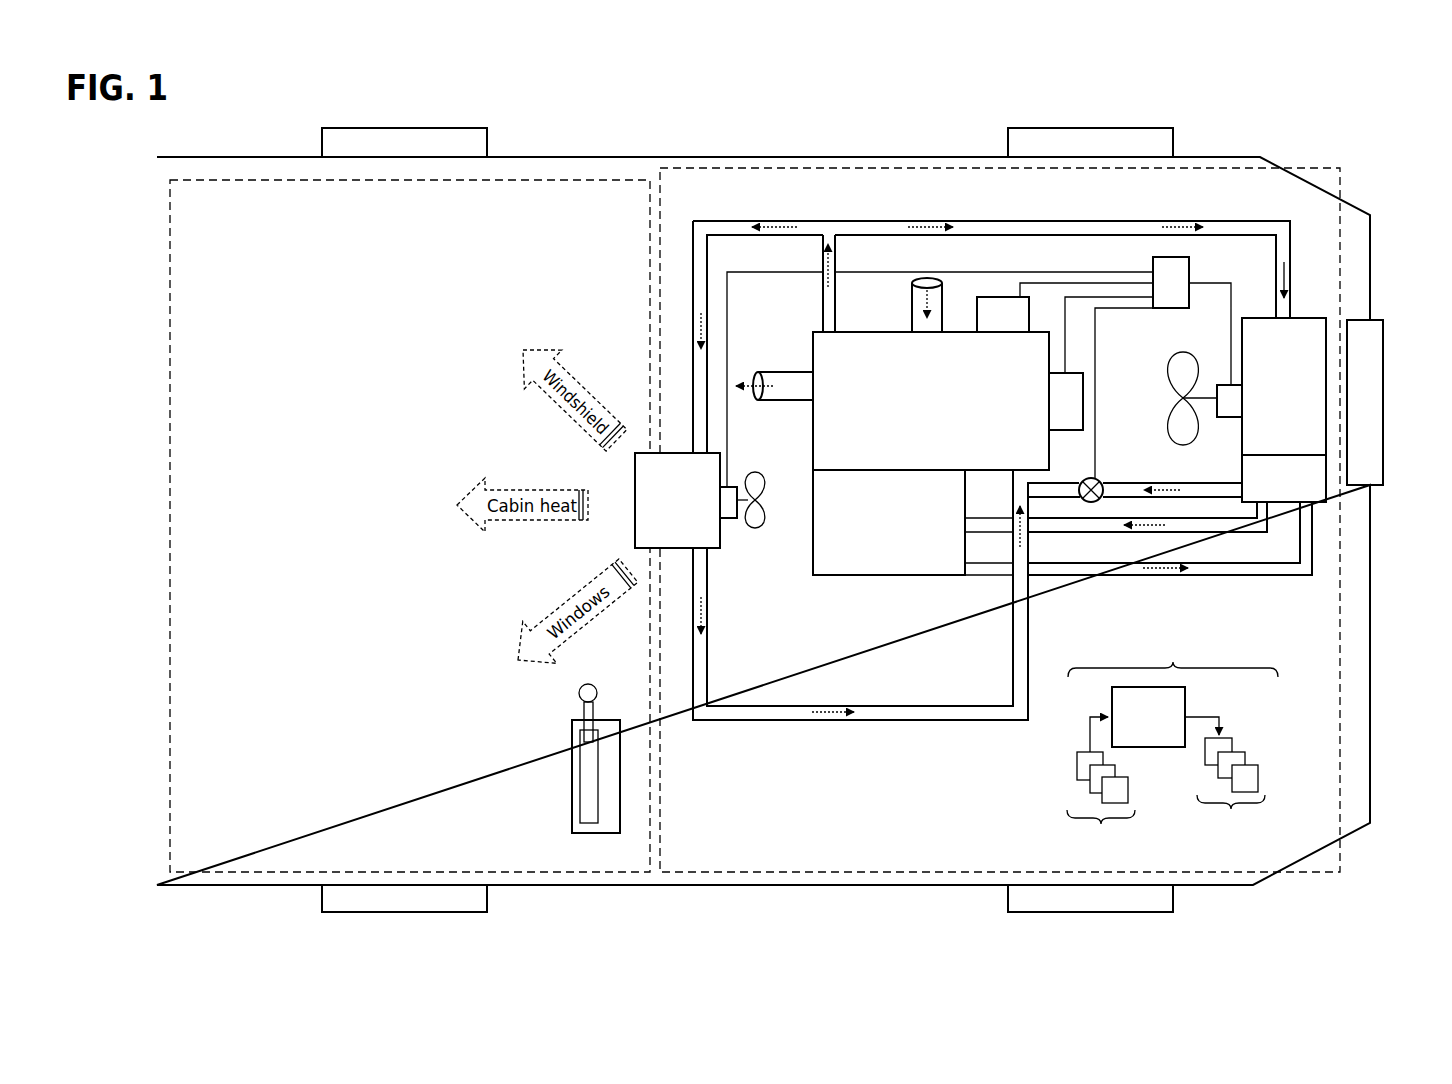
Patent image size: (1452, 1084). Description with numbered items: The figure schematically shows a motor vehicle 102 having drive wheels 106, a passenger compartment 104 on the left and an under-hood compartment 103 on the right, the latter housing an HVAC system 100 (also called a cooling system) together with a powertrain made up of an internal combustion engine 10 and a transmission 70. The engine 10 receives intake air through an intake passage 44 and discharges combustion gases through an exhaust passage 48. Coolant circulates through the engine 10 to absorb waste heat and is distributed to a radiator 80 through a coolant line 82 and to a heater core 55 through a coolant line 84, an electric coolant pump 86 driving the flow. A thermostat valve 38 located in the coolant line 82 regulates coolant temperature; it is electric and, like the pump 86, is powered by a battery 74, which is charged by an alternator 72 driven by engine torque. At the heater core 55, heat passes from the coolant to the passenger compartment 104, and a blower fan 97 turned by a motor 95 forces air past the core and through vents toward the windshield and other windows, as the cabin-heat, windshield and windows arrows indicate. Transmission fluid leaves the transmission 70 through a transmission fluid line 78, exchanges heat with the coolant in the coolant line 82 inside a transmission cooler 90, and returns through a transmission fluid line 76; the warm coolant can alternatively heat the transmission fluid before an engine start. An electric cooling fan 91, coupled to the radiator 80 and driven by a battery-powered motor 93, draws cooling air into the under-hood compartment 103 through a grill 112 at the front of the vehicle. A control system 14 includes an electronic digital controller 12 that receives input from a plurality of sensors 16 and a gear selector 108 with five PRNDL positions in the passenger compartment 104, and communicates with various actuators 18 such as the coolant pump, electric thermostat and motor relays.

The internal combustion engine 10 is at (981, 413).
The electronic digital controller 12 is at (1137, 727).
The control system 14 is at (1177, 745).
The sensors 16 is at (1101, 793).
The actuators 18 is at (1241, 784).
The thermostat valve 38 is at (1083, 478).
The intake passage 44 is at (912, 312).
The exhaust passage 48 is at (795, 400).
The heater core 55 is at (667, 508).
The transmission 70 is at (903, 563).
The alternator 72 is at (992, 324).
The battery 74 is at (1160, 292).
The transmission fluid line 76 is at (1077, 533).
The transmission fluid line 78 is at (1272, 578).
The radiator 80 is at (1273, 396).
The coolant line 82 is at (983, 221).
The coolant line 84 is at (795, 237).
The electric coolant pump 86 is at (1055, 411).
The transmission cooler 90 is at (1273, 489).
The electric cooling fan 91 is at (1172, 370).
The fan motor 93 is at (1235, 418).
The motor 95 is at (728, 520).
The blower fan 97 is at (760, 480).
The HVAC system 100 is at (1228, 208).
The motor vehicle 102 is at (675, 157).
The under-hood compartment 103 is at (1340, 190).
The passenger compartment 104 is at (293, 551).
The drive wheels 106 is at (1075, 128).
The gear selector 108 is at (572, 823).
The grill 112 is at (1384, 390).